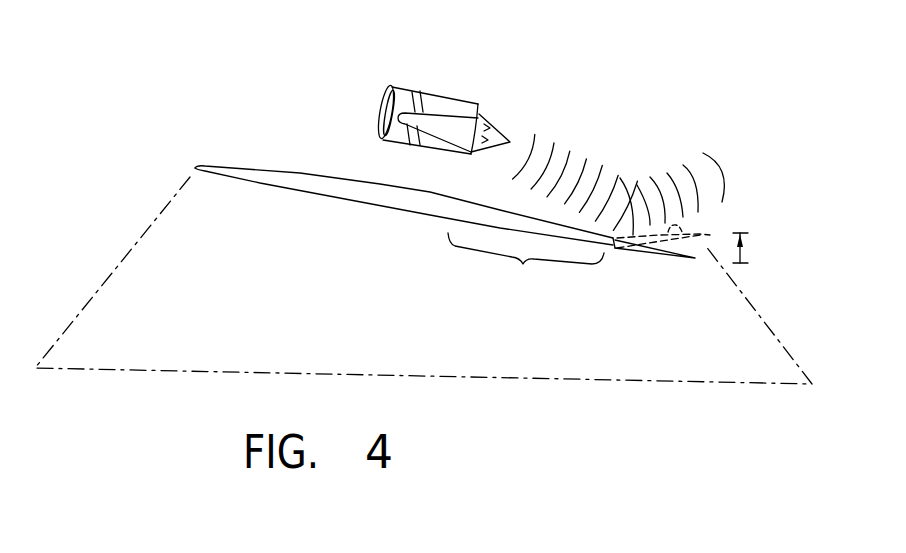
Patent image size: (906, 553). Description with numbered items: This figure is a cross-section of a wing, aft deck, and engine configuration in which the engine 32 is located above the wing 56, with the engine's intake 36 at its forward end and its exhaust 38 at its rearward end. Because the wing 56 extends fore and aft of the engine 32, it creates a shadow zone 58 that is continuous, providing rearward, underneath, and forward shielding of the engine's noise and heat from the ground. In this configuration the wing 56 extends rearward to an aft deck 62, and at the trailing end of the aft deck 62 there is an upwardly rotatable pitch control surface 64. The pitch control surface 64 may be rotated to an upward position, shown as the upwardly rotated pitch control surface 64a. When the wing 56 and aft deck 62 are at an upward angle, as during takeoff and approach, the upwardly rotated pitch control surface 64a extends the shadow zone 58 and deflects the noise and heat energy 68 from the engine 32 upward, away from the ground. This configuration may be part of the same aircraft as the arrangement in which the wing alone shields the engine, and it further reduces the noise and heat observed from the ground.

The engine 32 is at (448, 71).
The intake 36 is at (386, 88).
The exhaust 38 is at (483, 117).
The wing 56 is at (295, 180).
The shadow zone 58 is at (395, 306).
The aft deck 62 is at (523, 264).
The pitch control surface 64 is at (662, 258).
The upwardly rotated pitch control surface 64a is at (682, 238).
The noise and heat energy 68 is at (723, 174).